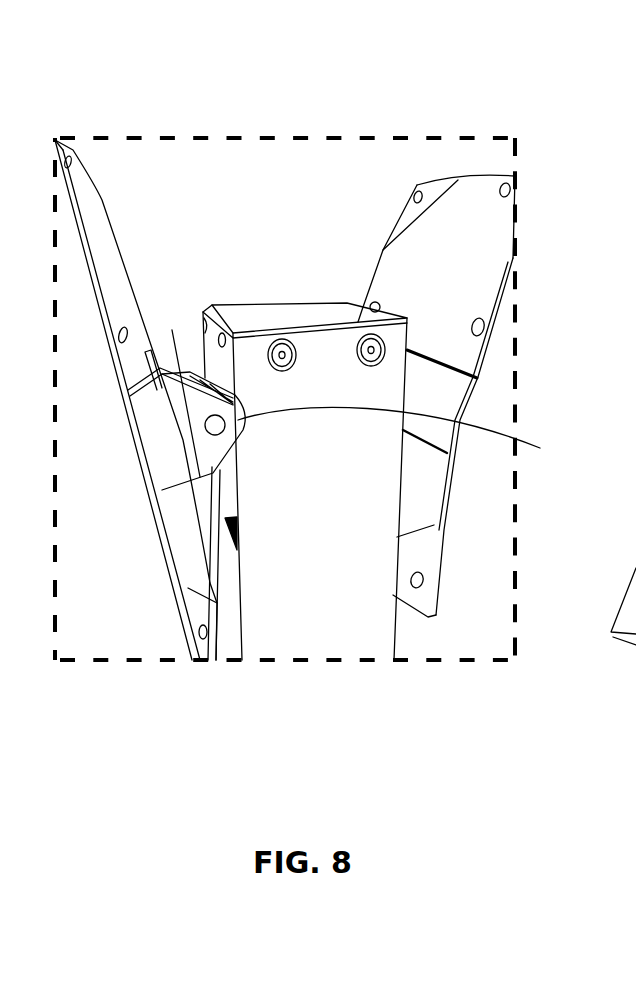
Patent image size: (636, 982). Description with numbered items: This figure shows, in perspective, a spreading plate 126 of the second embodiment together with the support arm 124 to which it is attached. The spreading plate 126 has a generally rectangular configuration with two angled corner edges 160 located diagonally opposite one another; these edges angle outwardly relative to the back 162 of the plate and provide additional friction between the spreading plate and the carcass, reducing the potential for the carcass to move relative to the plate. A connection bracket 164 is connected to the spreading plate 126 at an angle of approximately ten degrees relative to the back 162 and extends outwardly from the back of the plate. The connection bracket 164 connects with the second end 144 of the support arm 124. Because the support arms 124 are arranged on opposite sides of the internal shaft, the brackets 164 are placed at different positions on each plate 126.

The support arm 124 is at (235, 470).
The spreading plate 126 is at (472, 262).
The second end 144 is at (423, 437).
The angled corner edge 160 is at (433, 188).
The back 162 is at (425, 307).
The connection bracket 164 is at (193, 400).